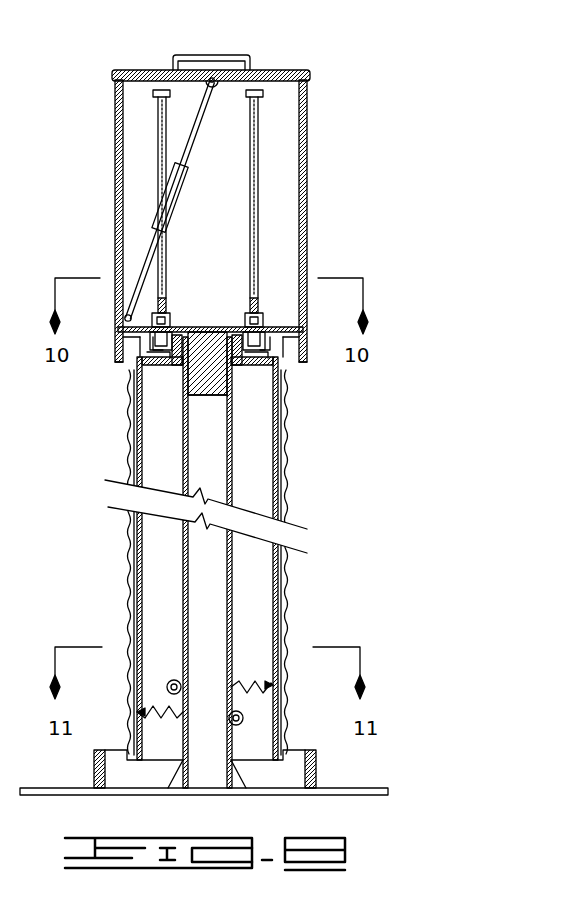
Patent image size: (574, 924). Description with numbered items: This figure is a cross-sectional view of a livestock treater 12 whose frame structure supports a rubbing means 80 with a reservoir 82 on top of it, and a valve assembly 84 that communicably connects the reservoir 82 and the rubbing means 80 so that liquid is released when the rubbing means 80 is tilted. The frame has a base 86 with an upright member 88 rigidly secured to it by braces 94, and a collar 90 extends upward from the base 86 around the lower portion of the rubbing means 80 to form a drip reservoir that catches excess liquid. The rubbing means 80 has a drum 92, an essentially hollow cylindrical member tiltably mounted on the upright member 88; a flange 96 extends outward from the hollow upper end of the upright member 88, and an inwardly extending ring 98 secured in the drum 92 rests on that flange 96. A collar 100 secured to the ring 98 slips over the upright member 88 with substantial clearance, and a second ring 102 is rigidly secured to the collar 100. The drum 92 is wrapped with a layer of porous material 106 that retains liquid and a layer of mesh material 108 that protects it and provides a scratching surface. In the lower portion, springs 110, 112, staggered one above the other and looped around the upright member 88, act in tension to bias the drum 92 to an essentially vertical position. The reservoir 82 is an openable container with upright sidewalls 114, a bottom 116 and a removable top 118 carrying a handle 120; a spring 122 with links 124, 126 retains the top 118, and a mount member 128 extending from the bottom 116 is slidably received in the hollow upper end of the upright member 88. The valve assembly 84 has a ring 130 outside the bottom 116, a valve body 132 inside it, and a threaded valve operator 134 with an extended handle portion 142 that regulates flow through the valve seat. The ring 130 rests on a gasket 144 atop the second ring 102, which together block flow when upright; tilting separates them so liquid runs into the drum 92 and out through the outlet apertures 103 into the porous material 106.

The livestock treater 12 is at (113, 137).
The rubbing means 80 is at (128, 586).
The reservoir 82 is at (308, 142).
The valve assembly 84 is at (238, 318).
The base 86 is at (72, 797).
The upright member 88 is at (183, 432).
The collar 90 is at (94, 757).
The drum 92 is at (285, 503).
The braces 94 is at (232, 775).
The flange 96 is at (136, 445).
The ring 98 is at (252, 370).
The collar 100 is at (258, 362).
The second ring 102 is at (175, 342).
The outlet apertures 103 is at (150, 345).
The porous material 106 is at (288, 592).
The mesh material 108 is at (285, 612).
The spring 110 is at (268, 683).
The spring 112 is at (150, 710).
The upright sidewalls 114 is at (308, 113).
The bottom 116 is at (290, 328).
The removable top 118 is at (285, 72).
The handle 120 is at (213, 56).
The spring 122 is at (168, 208).
The link 124 is at (187, 150).
The link 126 is at (128, 310).
The mount member 128 is at (212, 397).
The ring 130 is at (150, 325).
The valve body 132 is at (258, 330).
The valve operator 134 is at (262, 315).
The extended handle portion 142 is at (253, 172).
The gasket 144 is at (138, 352).